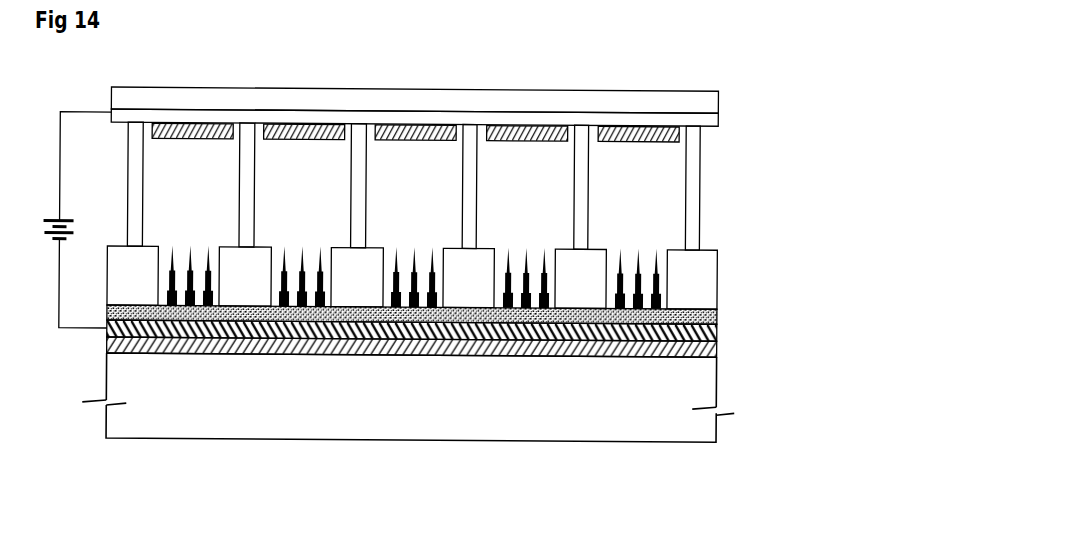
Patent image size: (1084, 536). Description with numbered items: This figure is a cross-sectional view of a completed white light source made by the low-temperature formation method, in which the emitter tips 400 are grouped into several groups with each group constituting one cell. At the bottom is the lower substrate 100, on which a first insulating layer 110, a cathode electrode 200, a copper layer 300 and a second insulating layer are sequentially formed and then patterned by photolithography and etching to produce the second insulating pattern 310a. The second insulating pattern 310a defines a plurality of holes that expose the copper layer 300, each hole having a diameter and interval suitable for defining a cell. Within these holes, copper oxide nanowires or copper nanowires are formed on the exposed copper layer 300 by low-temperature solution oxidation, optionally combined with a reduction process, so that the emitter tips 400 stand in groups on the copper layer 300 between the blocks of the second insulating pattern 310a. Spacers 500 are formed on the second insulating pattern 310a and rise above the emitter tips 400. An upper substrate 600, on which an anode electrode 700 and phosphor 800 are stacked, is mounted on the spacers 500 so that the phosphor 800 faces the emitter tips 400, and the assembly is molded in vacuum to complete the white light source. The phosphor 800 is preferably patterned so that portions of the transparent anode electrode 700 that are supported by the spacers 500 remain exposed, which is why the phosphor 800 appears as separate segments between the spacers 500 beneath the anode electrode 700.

The lower substrate 100 is at (710, 380).
The first insulating layer 110 is at (719, 354).
The cathode electrode 200 is at (719, 334).
The copper layer 300 is at (719, 315).
The second insulating pattern 310a is at (710, 269).
The emitter tips 400 is at (628, 248).
The spacers 500 is at (699, 188).
The upper substrate 600 is at (717, 100).
The anode electrode 700 is at (717, 119).
The phosphor 800 is at (655, 142).